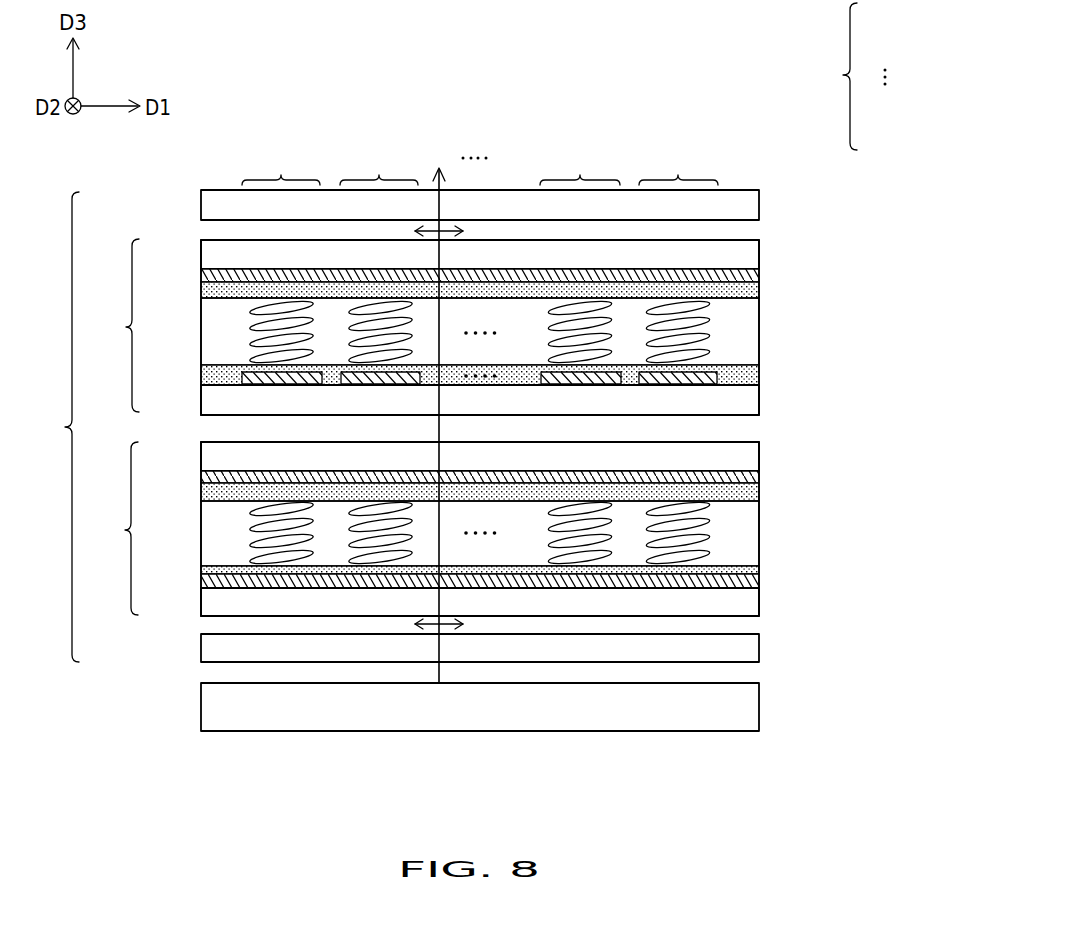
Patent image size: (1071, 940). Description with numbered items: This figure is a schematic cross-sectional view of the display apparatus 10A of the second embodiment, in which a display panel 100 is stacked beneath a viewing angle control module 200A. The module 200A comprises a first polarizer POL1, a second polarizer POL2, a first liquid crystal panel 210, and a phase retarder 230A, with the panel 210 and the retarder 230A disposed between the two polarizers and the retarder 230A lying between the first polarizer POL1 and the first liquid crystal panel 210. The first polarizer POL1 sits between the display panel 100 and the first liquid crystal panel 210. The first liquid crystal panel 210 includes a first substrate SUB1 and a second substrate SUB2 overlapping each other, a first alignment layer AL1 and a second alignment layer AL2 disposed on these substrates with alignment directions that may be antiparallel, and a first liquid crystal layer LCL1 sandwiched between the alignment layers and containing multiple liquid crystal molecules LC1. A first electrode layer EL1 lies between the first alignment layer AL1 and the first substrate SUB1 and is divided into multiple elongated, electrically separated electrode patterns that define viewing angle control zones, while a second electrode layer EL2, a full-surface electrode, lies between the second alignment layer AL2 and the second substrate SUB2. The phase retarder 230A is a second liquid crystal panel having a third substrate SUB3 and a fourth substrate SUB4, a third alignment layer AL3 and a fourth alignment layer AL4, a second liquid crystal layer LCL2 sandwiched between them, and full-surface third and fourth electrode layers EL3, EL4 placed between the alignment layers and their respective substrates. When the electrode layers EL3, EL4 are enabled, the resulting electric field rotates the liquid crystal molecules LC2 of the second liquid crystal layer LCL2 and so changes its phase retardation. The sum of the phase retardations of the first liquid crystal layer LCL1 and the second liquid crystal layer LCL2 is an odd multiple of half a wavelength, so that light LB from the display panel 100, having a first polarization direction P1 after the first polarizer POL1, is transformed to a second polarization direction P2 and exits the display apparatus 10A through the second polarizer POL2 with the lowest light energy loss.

The display apparatus 10A is at (913, 784).
The display panel 100 is at (730, 708).
The viewing angle control module 200A is at (48, 427).
The first liquid crystal panel 210 is at (112, 325).
The phase retarder 230A is at (106, 528).
The first polarizer POL1 is at (733, 648).
The second polarizer POL2 is at (738, 205).
The first substrate SUB1 is at (747, 405).
The second substrate SUB2 is at (738, 252).
The third substrate SUB3 is at (745, 600).
The fourth substrate SUB4 is at (215, 463).
The first electrode layer EL1 is at (872, 77).
The second electrode layer EL2 is at (745, 276).
The third electrode layer EL3 is at (745, 580).
The fourth electrode layer EL4 is at (745, 478).
The first alignment layer AL1 is at (733, 365).
The second alignment layer AL2 is at (740, 292).
The third alignment layer AL3 is at (733, 570).
The fourth alignment layer AL4 is at (740, 492).
The first liquid crystal layer LCL1 is at (738, 320).
The second liquid crystal layer LCL2 is at (738, 521).
The liquid crystal molecules LC1 is at (248, 327).
The liquid crystal molecules LC2 is at (262, 529).
The first polarization direction P1 is at (432, 628).
The second polarization direction P2 is at (437, 231).
The light LB is at (438, 673).